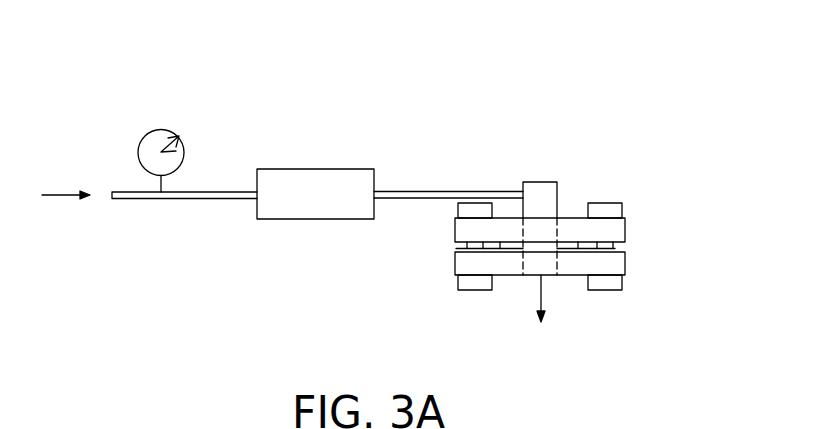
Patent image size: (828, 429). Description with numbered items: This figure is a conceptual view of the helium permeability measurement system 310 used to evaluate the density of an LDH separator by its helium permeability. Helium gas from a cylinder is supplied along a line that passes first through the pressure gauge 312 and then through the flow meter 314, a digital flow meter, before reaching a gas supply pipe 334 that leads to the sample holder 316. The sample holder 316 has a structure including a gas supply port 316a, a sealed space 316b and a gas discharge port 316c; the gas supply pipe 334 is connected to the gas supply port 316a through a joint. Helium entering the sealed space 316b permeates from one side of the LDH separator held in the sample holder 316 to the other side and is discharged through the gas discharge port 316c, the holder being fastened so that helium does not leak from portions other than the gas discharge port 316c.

The helium permeability measurement system 310 is at (578, 79).
The pressure gauge 312 is at (154, 129).
The flow meter 314 is at (322, 188).
The gas supply pipe 334 is at (420, 191).
The sample holder 316 is at (604, 161).
The gas supply port 316a is at (557, 232).
The sealed space 316b is at (547, 248).
The gas discharge port 316c is at (557, 258).